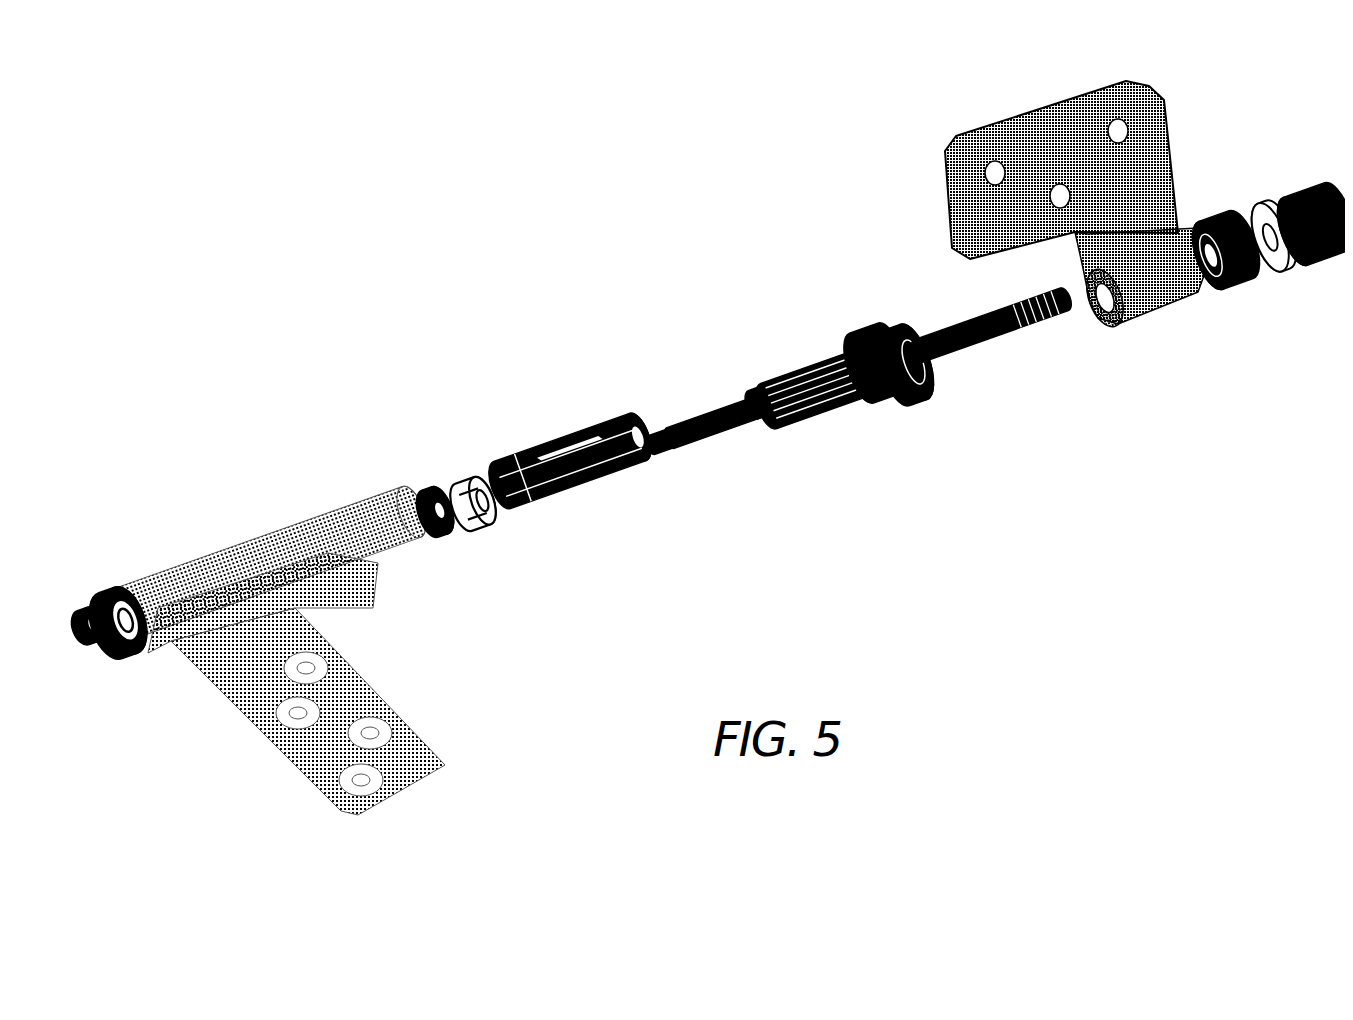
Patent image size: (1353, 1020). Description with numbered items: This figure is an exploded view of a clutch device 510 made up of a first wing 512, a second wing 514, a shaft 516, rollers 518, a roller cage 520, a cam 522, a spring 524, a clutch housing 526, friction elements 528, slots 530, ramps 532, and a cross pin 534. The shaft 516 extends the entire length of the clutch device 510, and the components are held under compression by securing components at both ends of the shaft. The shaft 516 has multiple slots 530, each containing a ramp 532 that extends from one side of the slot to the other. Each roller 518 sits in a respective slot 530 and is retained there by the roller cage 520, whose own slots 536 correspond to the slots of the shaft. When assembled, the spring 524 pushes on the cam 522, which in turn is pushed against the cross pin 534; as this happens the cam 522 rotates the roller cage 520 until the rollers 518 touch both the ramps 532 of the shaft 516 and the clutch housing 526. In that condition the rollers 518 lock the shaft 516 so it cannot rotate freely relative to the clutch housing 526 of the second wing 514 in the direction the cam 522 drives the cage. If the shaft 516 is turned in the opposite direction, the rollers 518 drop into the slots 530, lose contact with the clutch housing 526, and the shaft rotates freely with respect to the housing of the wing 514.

The clutch device 510 is at (538, 130).
The first wing 512 is at (1132, 130).
The second wing 514 is at (385, 758).
The shaft 516 is at (878, 322).
The rollers 518 is at (762, 372).
The roller cage 520 is at (527, 494).
The cam 522 is at (452, 476).
The spring 524 is at (378, 498).
The clutch housing 526 is at (308, 566).
The friction elements 528 is at (1252, 279).
The slots 530 is at (842, 352).
The ramps 532 is at (766, 396).
The cross pin 534 is at (746, 392).
The slots 536 is at (584, 447).